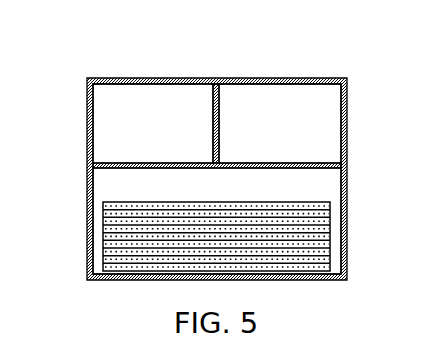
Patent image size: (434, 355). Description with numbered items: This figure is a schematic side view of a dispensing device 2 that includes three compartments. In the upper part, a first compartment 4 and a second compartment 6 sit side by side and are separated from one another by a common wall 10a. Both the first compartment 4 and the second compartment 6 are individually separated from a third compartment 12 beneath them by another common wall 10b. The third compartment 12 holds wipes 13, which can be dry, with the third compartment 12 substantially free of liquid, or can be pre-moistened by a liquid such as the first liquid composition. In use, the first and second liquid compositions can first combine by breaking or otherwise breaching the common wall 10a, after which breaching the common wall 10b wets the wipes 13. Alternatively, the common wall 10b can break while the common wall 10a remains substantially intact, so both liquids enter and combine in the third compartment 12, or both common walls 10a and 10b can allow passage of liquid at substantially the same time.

The dispensing device 2 is at (107, 60).
The first compartment 4 is at (146, 130).
The second compartment 6 is at (271, 130).
The common wall 10a is at (137, 168).
The common wall 10b is at (220, 115).
The third compartment 12 is at (229, 195).
The wipes 13 is at (317, 233).